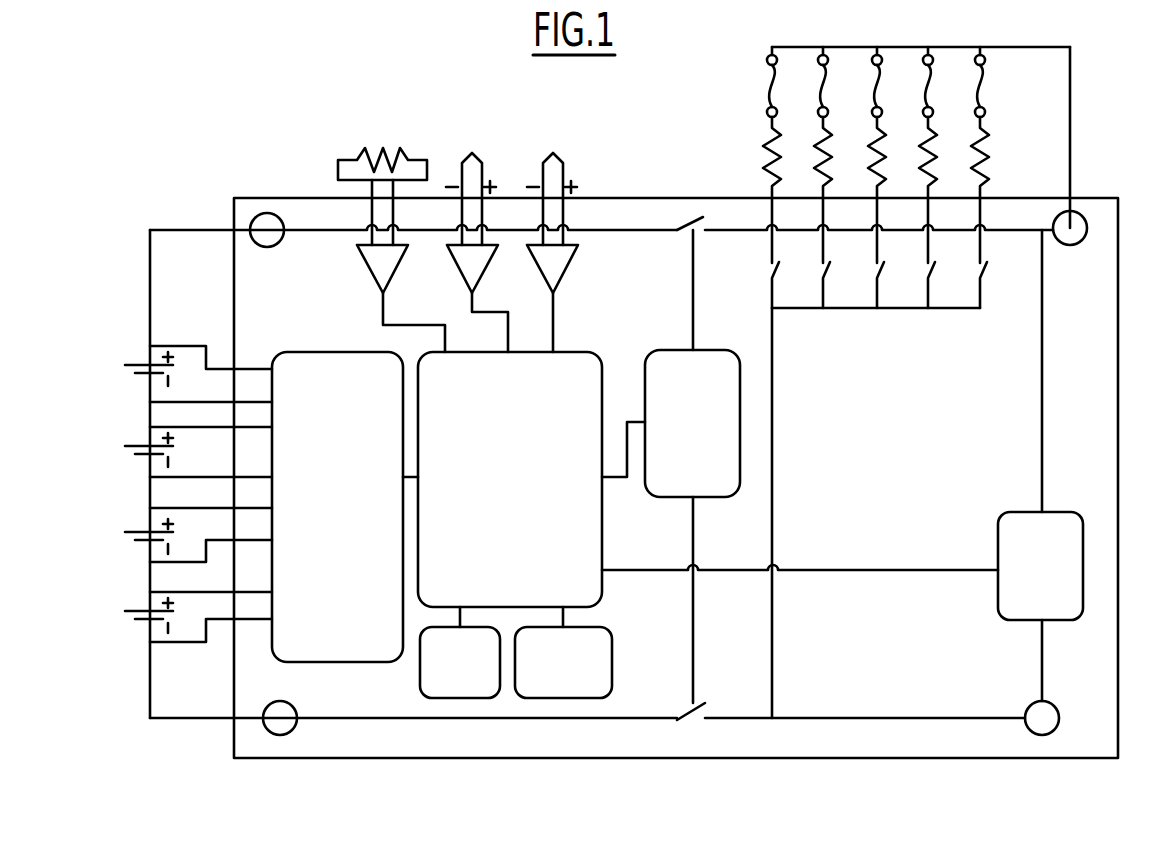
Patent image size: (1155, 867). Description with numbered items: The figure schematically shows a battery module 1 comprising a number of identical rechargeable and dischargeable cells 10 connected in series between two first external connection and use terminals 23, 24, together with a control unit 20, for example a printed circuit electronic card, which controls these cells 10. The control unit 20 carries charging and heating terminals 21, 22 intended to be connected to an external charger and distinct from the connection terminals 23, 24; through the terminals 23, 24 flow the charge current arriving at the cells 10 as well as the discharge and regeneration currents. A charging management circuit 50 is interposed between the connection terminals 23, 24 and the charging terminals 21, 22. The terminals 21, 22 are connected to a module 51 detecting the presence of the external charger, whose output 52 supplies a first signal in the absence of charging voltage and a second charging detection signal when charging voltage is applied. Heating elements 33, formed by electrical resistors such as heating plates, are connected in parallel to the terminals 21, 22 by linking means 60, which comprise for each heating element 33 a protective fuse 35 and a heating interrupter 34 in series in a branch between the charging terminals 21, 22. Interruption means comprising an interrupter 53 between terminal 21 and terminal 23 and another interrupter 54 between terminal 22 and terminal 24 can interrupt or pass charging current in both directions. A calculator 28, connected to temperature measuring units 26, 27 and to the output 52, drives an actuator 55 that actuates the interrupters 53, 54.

The battery module 1 is at (424, 770).
The cells 10 is at (125, 366).
The control unit 20 is at (320, 748).
The charging and heating terminal 21 is at (1030, 705).
The charging and heating terminal 22 is at (1083, 213).
The external connection and use terminal 23 is at (258, 730).
The external connection and use terminal 24 is at (262, 214).
The temperature measuring unit 26 is at (470, 272).
The temperature measuring unit 27 is at (557, 270).
The calculator 28 is at (531, 525).
The heating elements 33 is at (985, 170).
The heating interrupter 34 is at (985, 265).
The protective fuse 35 is at (983, 92).
The charging management circuit 50 is at (573, 722).
The charger presence detection module 51 is at (1010, 592).
The output 52 is at (918, 567).
The interrupter 53 is at (696, 725).
The interrupter 54 is at (700, 212).
The actuator 55 is at (692, 466).
The linking means 60 is at (886, 382).